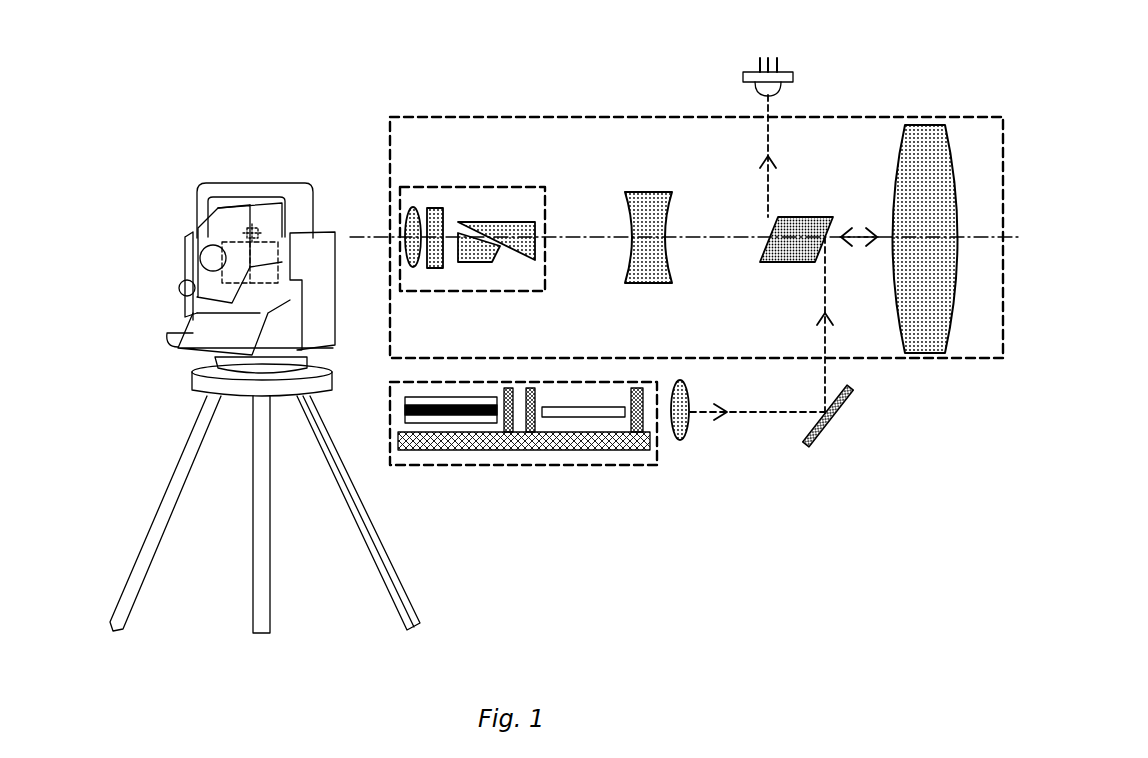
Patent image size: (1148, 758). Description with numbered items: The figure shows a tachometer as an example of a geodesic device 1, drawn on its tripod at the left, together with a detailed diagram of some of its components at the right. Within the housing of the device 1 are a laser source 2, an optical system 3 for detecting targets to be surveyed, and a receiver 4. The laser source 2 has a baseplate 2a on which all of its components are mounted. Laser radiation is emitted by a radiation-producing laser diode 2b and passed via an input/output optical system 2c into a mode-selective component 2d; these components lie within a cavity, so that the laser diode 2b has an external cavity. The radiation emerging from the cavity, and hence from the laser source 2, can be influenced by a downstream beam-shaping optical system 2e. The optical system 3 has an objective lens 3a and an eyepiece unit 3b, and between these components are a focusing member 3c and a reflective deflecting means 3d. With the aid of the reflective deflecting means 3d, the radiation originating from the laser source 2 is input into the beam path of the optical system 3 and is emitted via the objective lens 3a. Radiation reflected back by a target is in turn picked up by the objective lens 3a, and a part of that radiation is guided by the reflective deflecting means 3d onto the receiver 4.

The geodesic device 1 is at (307, 517).
The laser source 2 is at (658, 450).
The baseplate 2a is at (575, 413).
The radiation-producing laser diode 2b is at (478, 415).
The input/output optical system 2c is at (508, 430).
The mode-selective component 2d is at (637, 448).
The beam-shaping optical system 2e is at (687, 432).
The optical system for detecting targets to be surveyed 3 is at (892, 360).
The objective lens 3a is at (933, 153).
The eyepiece unit 3b is at (532, 187).
The focusing member 3c is at (650, 263).
The reflective deflecting means 3d is at (795, 243).
The receiver 4 is at (755, 86).